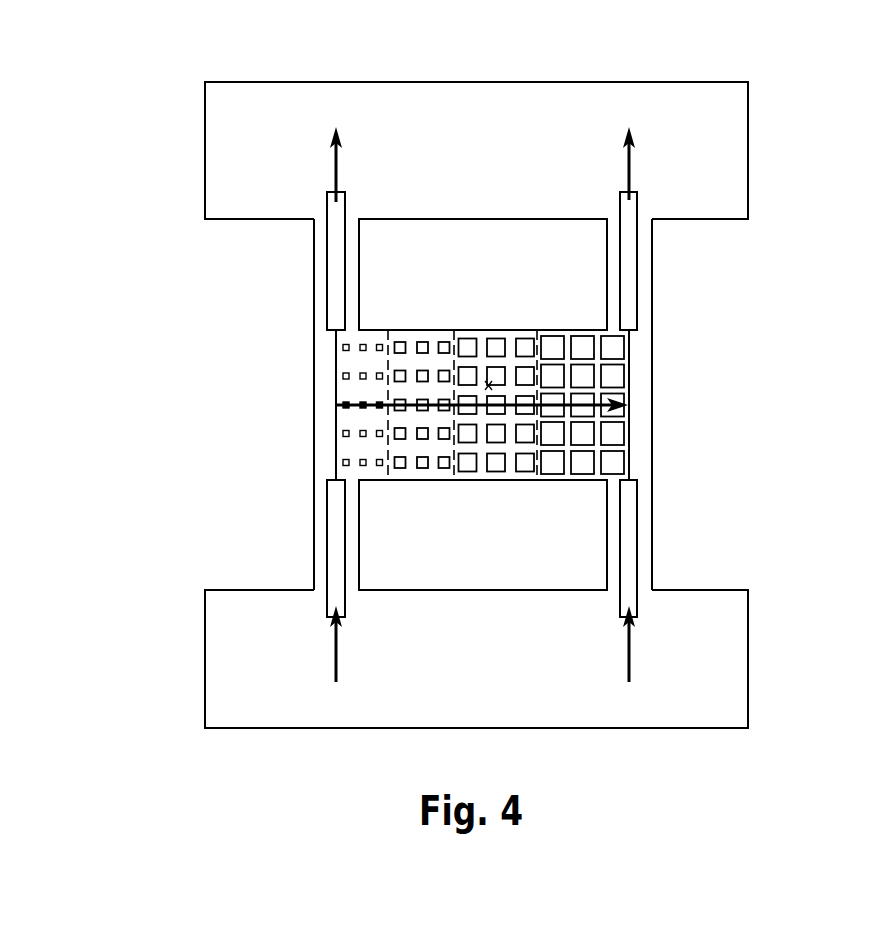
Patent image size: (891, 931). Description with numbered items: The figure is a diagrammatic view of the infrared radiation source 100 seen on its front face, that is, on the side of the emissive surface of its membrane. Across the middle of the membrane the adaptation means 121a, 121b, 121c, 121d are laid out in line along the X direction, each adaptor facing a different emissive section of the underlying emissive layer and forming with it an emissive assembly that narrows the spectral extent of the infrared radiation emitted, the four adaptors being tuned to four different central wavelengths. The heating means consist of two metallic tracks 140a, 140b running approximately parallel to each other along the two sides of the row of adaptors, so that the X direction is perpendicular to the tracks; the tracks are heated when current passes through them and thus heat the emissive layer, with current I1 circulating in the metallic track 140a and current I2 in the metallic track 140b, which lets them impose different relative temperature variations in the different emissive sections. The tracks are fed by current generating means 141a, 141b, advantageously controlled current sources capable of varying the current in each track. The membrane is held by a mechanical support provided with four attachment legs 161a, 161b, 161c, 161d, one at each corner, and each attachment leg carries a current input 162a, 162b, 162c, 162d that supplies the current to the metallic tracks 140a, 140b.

The source 100 is at (158, 243).
The adaptation means 121a is at (362, 376).
The adaptation means 121b is at (420, 433).
The adaptation means 121c is at (528, 376).
The adaptation means 121d is at (582, 398).
The heating means 140a is at (336, 462).
The heating means 140b is at (629, 462).
The current generating means 141a is at (336, 164).
The current generating means 141b is at (629, 163).
The attachment leg 161a is at (317, 567).
The attachment leg 161b is at (313, 313).
The attachment leg 161c is at (652, 567).
The attachment leg 161d is at (652, 294).
The current input 162a is at (336, 531).
The current input 162b is at (338, 272).
The current input 162c is at (632, 518).
The current input 162d is at (629, 249).